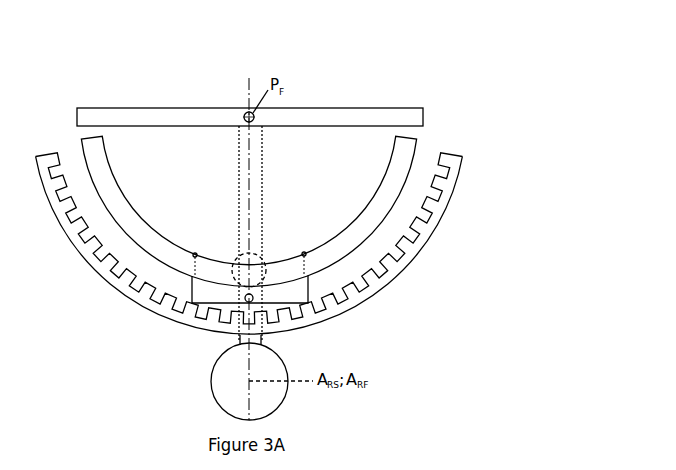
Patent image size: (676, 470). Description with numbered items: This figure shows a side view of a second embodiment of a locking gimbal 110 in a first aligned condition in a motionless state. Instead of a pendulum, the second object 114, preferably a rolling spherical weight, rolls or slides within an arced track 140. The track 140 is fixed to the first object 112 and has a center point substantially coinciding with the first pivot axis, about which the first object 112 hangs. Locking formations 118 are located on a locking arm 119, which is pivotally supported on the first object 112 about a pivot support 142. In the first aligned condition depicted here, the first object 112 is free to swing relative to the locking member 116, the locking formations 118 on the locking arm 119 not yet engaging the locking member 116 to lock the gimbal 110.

The adjustment mechanism 110 is at (578, 173).
The first object 112 is at (240, 171).
The second object 114 is at (258, 267).
The locking member 116 is at (258, 258).
The locking formations 118 is at (188, 314).
The locking arm 119 is at (220, 294).
The track 140 is at (400, 172).
The pivot support 142 is at (254, 297).